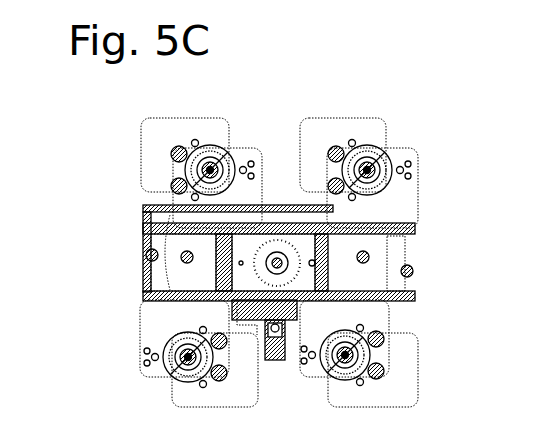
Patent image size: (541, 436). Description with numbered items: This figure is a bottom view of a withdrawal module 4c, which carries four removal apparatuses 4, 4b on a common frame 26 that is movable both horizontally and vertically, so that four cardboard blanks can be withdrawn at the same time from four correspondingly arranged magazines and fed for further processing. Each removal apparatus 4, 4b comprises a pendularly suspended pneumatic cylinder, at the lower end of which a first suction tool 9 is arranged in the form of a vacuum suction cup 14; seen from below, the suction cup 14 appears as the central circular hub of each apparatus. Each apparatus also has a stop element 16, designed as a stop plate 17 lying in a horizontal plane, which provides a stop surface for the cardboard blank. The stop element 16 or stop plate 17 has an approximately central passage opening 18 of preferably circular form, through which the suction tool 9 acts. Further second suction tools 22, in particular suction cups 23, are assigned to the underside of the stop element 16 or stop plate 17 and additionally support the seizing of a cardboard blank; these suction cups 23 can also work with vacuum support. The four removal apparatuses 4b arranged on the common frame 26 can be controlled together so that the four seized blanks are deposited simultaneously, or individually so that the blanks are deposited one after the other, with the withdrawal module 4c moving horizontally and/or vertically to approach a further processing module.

The removal apparatus 4 is at (363, 146).
The removal apparatus 4b is at (440, 150).
The withdrawal module 4c is at (90, 388).
The first suction tool 9 is at (395, 127).
The vacuum suction cup 14 is at (372, 165).
The stop element 16 is at (299, 141).
The stop plate 17 is at (311, 139).
The passage opening 18 is at (383, 160).
The second suction tool 22 is at (296, 129).
The suction cup 23 is at (326, 158).
The frame 26 is at (148, 277).